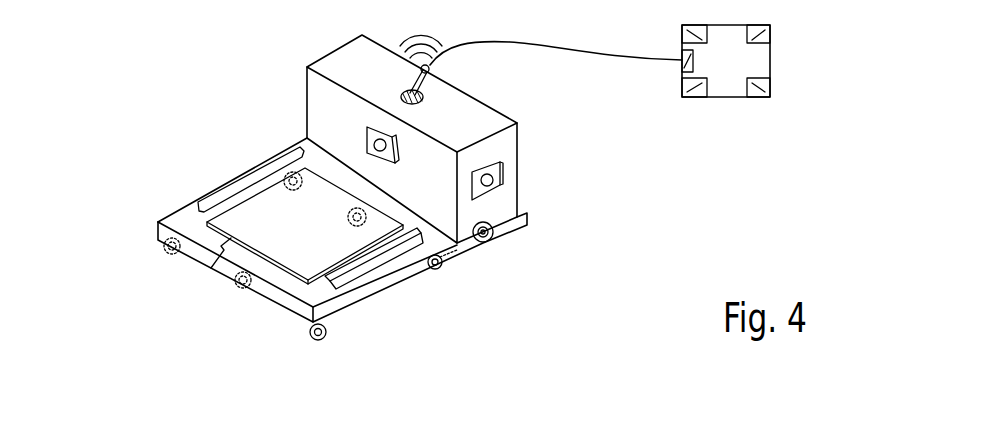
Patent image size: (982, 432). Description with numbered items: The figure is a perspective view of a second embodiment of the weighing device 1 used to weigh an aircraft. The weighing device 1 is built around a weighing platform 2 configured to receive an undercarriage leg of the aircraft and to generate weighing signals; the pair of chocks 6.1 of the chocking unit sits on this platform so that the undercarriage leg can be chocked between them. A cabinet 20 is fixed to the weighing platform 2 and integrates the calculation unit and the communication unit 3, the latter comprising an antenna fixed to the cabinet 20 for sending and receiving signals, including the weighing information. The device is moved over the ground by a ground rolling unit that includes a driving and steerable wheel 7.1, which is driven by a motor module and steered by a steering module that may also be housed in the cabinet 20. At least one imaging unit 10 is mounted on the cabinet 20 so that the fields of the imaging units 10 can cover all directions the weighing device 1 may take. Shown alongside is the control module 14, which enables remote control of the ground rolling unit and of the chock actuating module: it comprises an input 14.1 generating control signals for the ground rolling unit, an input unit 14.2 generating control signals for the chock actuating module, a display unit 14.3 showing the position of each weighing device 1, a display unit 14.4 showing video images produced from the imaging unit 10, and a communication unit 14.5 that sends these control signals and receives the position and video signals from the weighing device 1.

The weighing device 1 is at (138, 292).
The weighing platform 2 is at (222, 268).
The communication unit 3 is at (432, 73).
The chocks 6.1 is at (213, 197).
The driving and steerable wheel 7.1 is at (487, 244).
The imaging unit 10 is at (366, 131).
The control module 14 is at (770, 60).
The input 14.1 is at (770, 26).
The input unit 14.2 is at (682, 30).
The display unit 14.3 is at (700, 97).
The display unit 14.4 is at (760, 97).
The communication unit 14.5 is at (682, 68).
The cabinet 20 is at (487, 118).